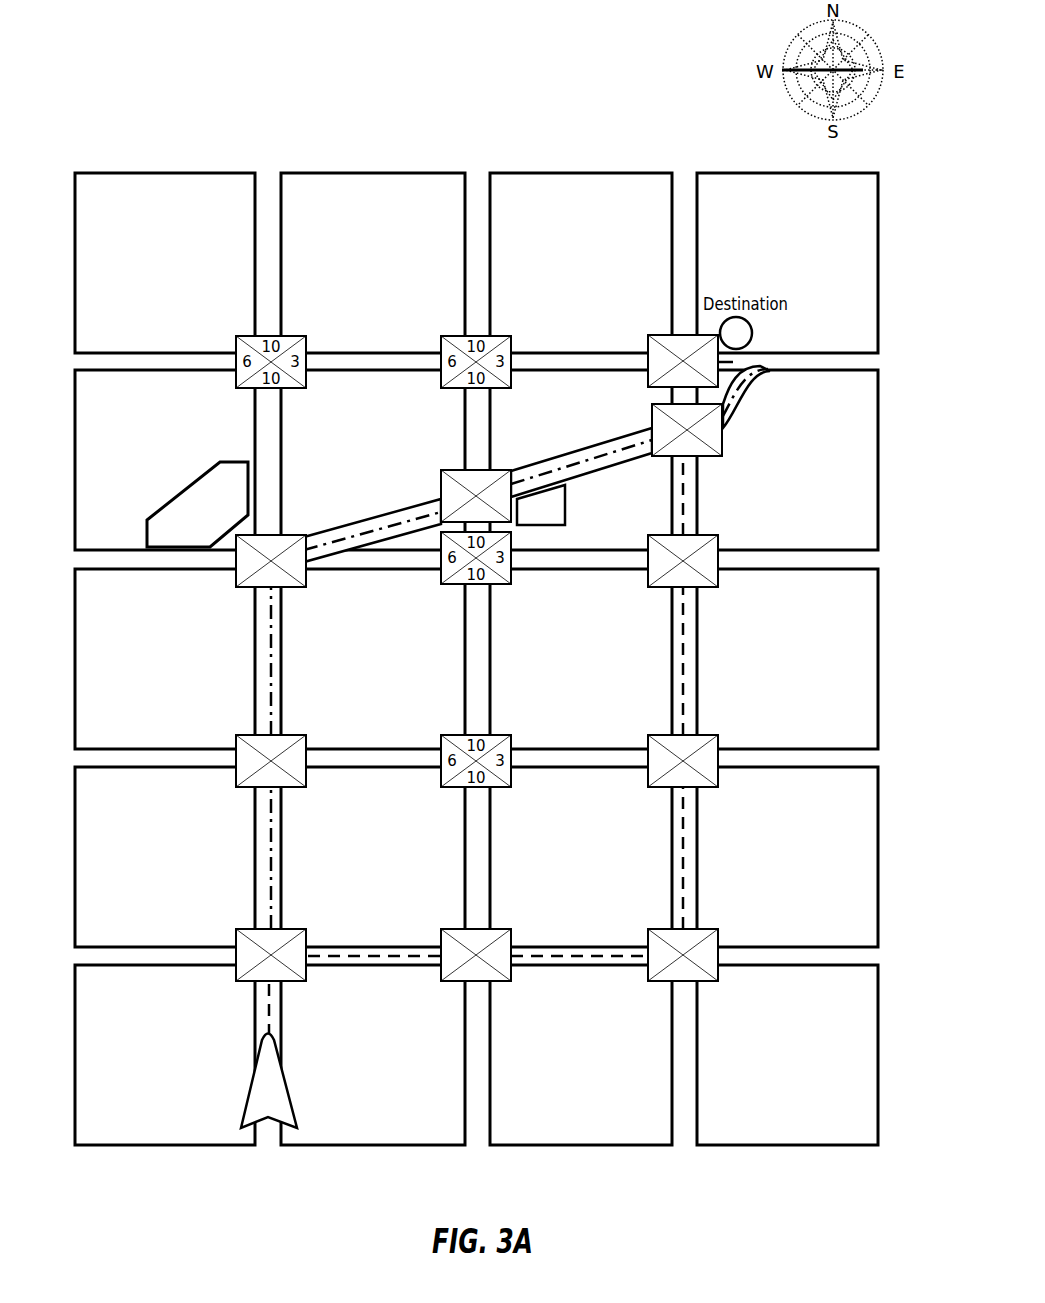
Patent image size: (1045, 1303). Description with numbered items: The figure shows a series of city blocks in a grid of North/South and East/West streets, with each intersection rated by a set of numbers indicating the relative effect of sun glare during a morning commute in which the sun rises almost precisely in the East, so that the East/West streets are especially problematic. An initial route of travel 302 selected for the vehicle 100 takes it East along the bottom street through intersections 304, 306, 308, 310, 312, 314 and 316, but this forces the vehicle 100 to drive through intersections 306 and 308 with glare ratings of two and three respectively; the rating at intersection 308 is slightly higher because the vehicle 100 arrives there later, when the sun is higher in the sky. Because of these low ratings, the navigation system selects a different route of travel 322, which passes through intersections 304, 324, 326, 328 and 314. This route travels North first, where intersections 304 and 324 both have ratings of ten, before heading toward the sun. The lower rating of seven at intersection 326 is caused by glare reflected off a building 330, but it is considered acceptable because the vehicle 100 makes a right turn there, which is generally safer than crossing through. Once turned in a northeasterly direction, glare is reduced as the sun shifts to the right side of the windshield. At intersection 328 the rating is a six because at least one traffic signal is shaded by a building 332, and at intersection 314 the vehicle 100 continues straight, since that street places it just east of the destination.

The vehicle 100 is at (283, 1109).
The route of travel 302 is at (372, 958).
The intersection 304 is at (318, 913).
The intersection 306 is at (519, 913).
The intersection 308 is at (726, 913).
The intersection 310 is at (726, 718).
The intersection 312 is at (726, 521).
The intersection 314 is at (737, 442).
The intersection 316 is at (639, 327).
The route of travel 322 is at (372, 533).
The intersection 324 is at (318, 716).
The intersection 326 is at (318, 518).
The intersection 328 is at (513, 457).
The building 330 is at (219, 528).
The building 332 is at (556, 523).